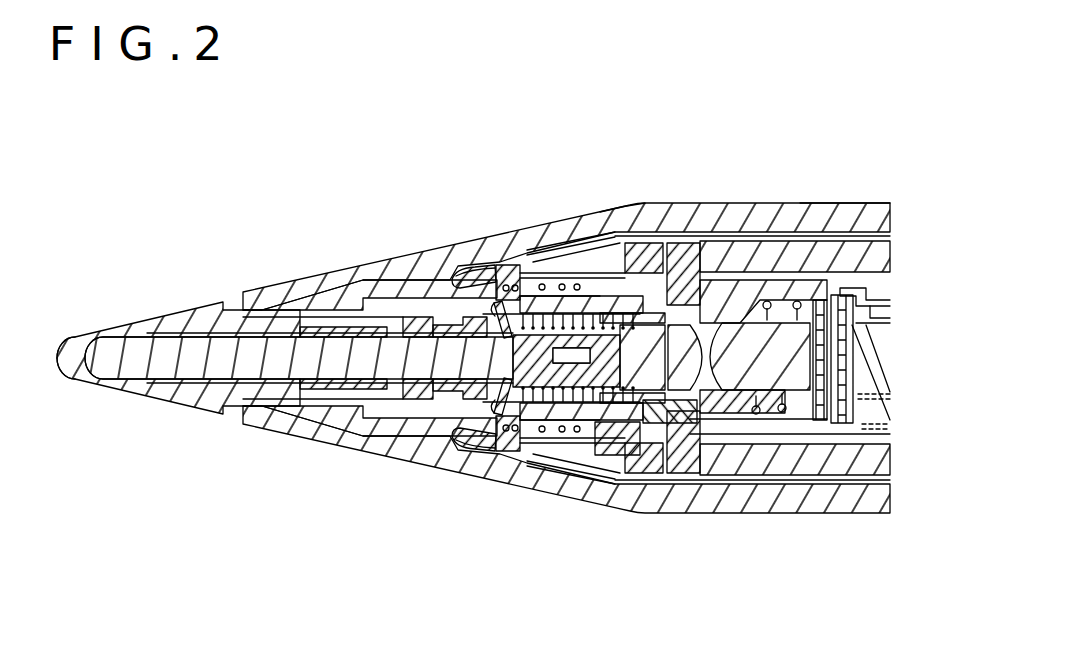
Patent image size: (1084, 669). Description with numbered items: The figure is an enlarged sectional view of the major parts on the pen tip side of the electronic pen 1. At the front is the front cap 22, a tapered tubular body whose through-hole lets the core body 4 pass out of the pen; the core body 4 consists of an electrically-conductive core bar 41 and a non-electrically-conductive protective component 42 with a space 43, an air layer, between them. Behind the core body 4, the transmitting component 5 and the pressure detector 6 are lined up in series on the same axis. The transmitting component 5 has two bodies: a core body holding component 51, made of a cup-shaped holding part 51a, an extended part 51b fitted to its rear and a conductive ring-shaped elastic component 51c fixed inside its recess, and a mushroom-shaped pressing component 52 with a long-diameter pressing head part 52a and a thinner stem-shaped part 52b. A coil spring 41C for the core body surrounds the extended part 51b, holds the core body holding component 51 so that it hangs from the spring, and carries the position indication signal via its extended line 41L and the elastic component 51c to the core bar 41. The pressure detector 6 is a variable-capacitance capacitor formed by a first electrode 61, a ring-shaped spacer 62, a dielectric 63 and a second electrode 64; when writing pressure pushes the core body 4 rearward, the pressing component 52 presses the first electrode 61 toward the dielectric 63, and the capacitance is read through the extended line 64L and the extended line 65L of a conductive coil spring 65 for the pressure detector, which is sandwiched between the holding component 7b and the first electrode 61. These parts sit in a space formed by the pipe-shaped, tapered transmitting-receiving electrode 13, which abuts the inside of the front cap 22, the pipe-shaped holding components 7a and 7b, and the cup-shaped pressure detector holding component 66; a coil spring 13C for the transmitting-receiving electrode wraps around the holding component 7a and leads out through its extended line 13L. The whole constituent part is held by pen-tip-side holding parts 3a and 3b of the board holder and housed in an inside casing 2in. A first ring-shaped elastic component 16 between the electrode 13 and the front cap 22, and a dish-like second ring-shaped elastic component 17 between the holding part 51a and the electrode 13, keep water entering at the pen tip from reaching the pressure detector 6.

The electronic pen 1 is at (241, 178).
The core body 4 is at (190, 253).
The core bar 41 is at (123, 355).
The protective component 42 is at (79, 343).
The space (air layer) 43 is at (171, 343).
The transmitting-receiving electrode 13 is at (321, 301).
The coil spring for the transmitting-receiving electrode 13C is at (530, 252).
The extended line from the coil spring for the transmitting-receiving electrode 13L is at (882, 323).
The front cap 22 is at (431, 268).
The first ring-shaped elastic component 16 is at (460, 266).
The second ring-shaped elastic component 17 is at (484, 262).
The coil spring for the core body 41C is at (604, 243).
The extended line of the coil spring for the core body 41L is at (886, 296).
The pipe-shaped holding component 7a is at (560, 280).
The pipe-shaped holding component 7b is at (683, 292).
The pen-tip-side holding part 3a is at (621, 207).
The pen-tip-side holding part 3b is at (882, 265).
The cup-shaped pressure detector holding component 66 is at (752, 298).
The inside casing 2in is at (850, 204).
The transmitting component 5 is at (457, 594).
The core body holding component 51 is at (397, 555).
The holding part 51a is at (474, 397).
The extended part 51b is at (512, 397).
The ring-shaped elastic component 51c is at (422, 397).
The pressing component 52 is at (600, 555).
The pressing head part 52a is at (668, 425).
The stem-shaped part 52b is at (612, 457).
The coil spring for the pressure detector 65 is at (748, 437).
The pressure detector 6 is at (753, 566).
The first electrode 61 is at (790, 432).
The ring-shaped spacer 62 is at (806, 420).
The dielectric 63 is at (825, 420).
The second electrode 64 is at (846, 424).
The extended line from the second electrode 64L is at (889, 395).
The extended line from the coil spring for the pressure detector 65L is at (888, 424).